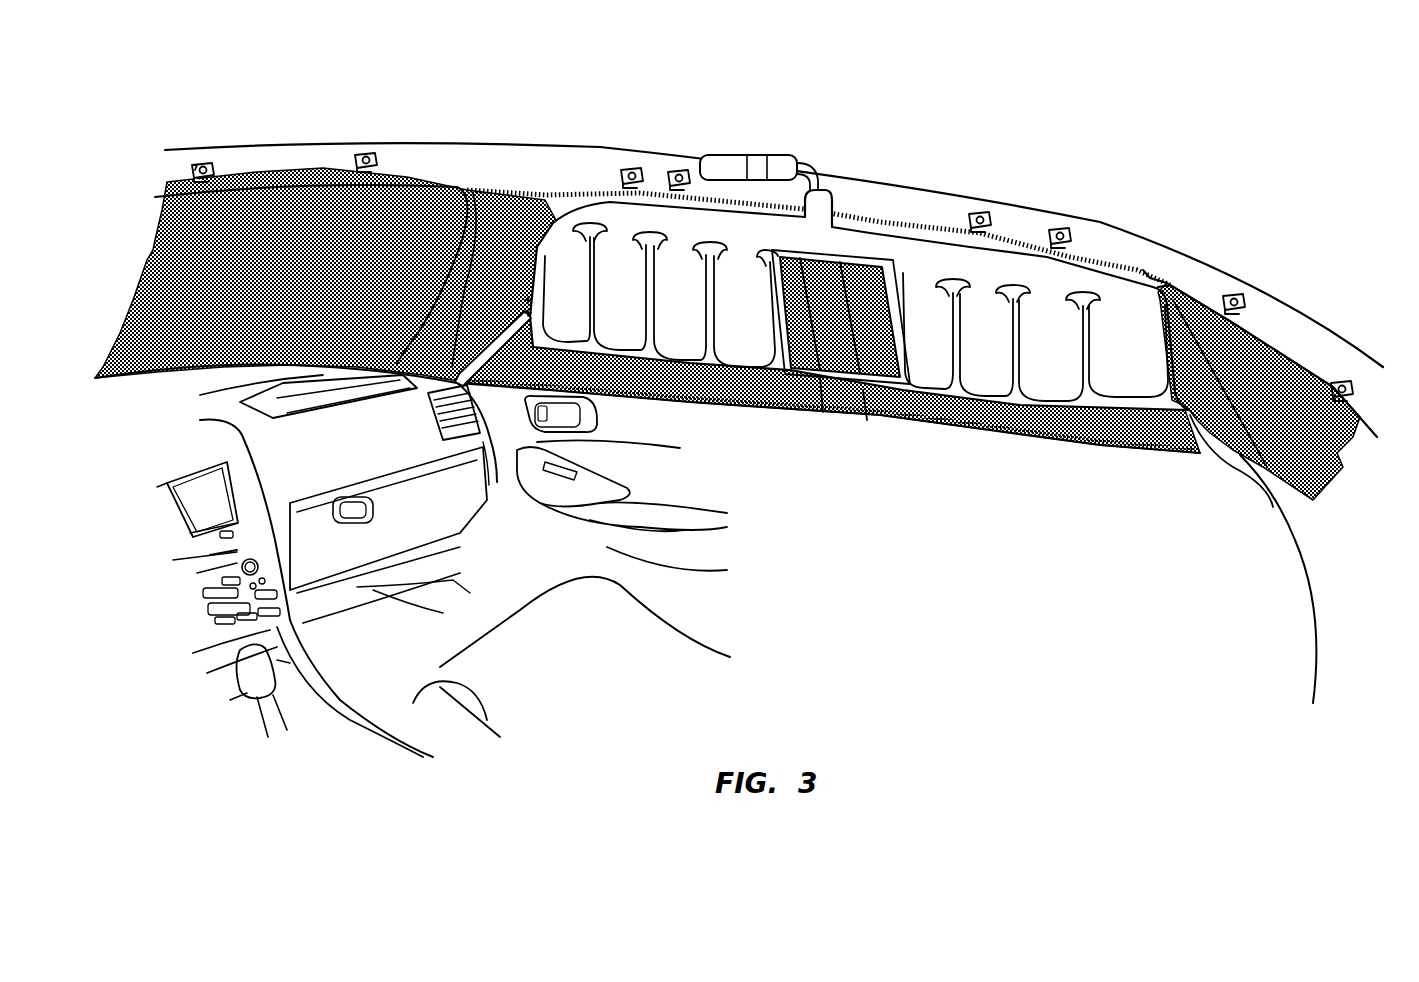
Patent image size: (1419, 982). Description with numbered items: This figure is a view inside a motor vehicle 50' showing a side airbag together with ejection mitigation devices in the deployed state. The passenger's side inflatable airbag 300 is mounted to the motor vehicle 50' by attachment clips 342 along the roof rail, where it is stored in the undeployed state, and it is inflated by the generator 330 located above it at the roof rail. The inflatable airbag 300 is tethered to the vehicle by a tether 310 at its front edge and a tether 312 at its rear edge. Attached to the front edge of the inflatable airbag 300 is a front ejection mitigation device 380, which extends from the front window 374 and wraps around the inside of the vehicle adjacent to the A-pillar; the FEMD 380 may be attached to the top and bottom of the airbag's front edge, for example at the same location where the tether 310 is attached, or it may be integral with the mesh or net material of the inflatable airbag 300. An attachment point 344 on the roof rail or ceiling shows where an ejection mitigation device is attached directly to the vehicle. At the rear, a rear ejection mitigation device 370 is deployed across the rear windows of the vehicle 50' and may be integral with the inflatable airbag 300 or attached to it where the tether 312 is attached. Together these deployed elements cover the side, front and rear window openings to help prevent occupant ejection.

The motor vehicle 50' is at (774, 245).
The inflatable airbag 300 is at (985, 327).
The tether 310 is at (522, 317).
The tether 312 is at (1233, 477).
The generator 330 is at (757, 163).
The attachment clips 342 is at (633, 168).
The attachment point 344 is at (205, 166).
The rear ejection mitigation device 370 is at (1267, 363).
The front window 374 is at (237, 378).
The front ejection mitigation device 380 is at (303, 215).